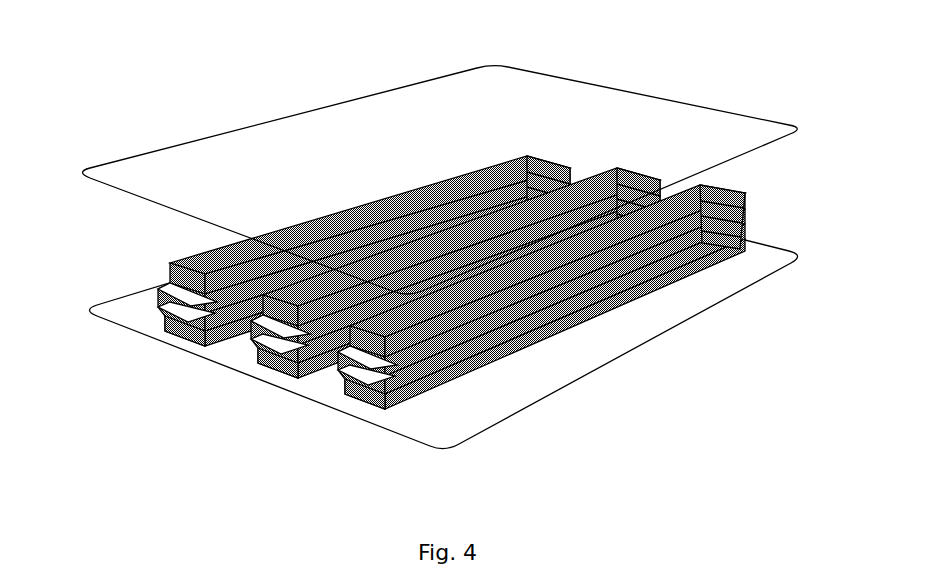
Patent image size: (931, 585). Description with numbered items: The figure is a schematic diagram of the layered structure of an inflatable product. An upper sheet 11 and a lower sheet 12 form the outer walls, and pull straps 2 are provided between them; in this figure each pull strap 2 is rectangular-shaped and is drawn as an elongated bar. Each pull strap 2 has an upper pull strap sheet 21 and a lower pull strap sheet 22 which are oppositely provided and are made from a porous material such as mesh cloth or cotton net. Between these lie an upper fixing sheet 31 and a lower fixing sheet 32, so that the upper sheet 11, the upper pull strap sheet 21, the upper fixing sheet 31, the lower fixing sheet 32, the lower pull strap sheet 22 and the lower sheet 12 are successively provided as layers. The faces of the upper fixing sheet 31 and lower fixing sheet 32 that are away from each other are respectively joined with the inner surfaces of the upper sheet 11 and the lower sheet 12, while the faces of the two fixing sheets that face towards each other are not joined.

The upper sheet 11 is at (602, 122).
The lower sheet 12 is at (588, 352).
The pull strap 2 is at (431, 338).
The upper pull strap sheet 21 is at (280, 290).
The upper fixing sheet 31 is at (270, 312).
The lower fixing sheet 32 is at (266, 340).
The lower pull strap sheet 22 is at (284, 368).